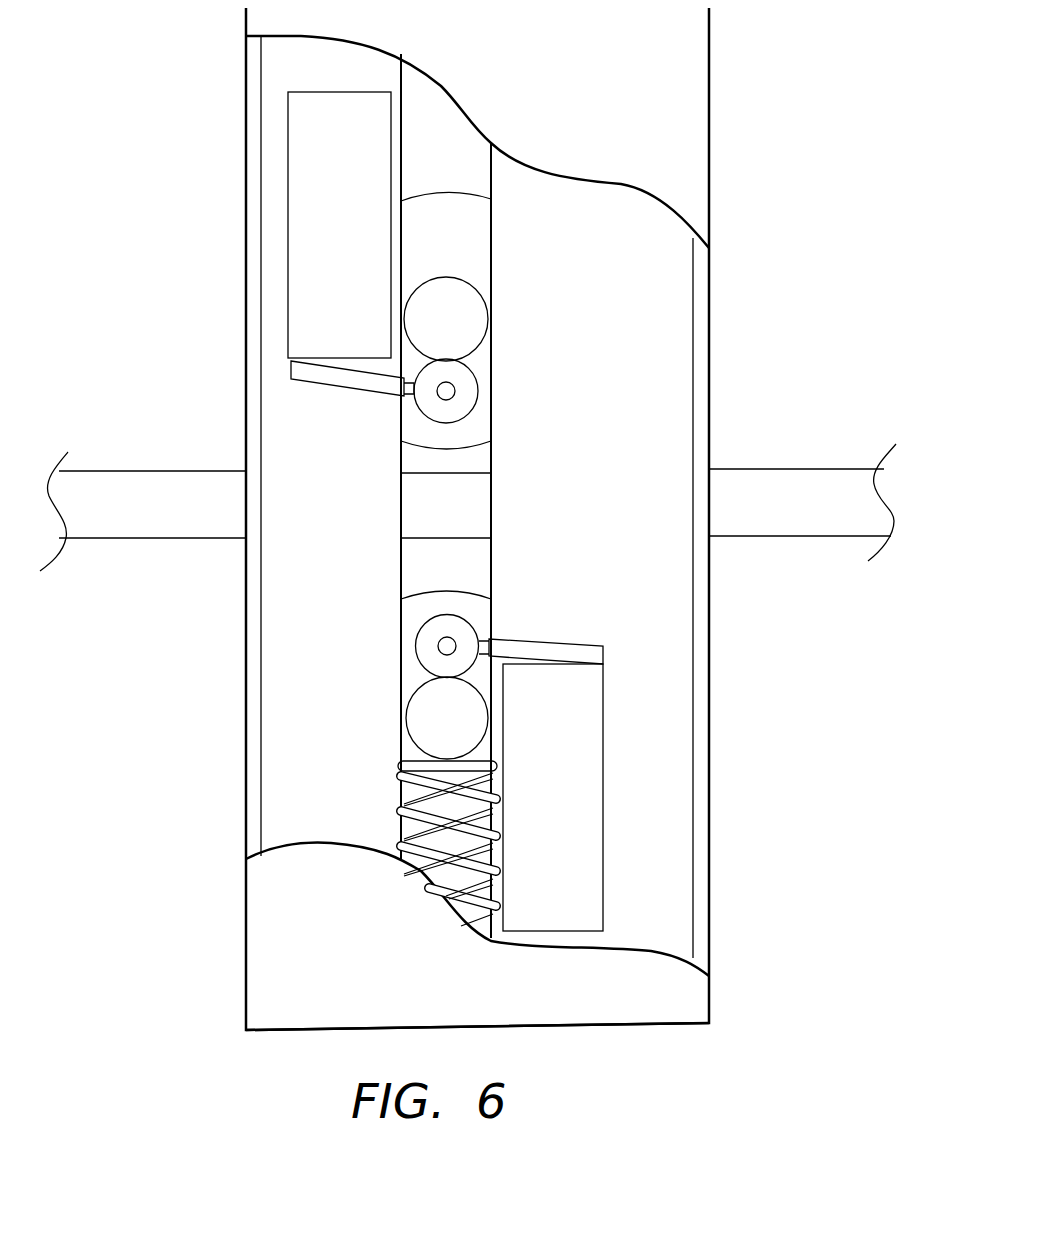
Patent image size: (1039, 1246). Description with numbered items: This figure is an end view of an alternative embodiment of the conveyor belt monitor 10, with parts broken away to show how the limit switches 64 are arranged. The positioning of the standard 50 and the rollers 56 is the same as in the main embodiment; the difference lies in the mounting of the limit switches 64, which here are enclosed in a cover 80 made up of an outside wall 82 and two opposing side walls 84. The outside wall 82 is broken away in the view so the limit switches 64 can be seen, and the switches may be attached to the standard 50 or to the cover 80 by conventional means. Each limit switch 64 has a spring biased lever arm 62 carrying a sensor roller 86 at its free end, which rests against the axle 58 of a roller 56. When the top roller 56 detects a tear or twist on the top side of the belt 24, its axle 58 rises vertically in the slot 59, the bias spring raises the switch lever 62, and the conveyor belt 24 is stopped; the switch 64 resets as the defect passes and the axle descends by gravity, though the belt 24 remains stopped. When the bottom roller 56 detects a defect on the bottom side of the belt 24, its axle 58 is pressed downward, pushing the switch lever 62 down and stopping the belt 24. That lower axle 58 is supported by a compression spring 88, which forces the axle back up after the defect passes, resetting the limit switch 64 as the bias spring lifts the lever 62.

The conveyor belt monitor 10 is at (172, 285).
The conveyor belt 24 is at (452, 470).
The standard 50 is at (282, 546).
The roller 56 is at (490, 228).
The axle 58 is at (477, 290).
The slot 59 is at (493, 157).
The lever arm 62 is at (320, 387).
The limit switch 64 is at (358, 90).
The cover 80 is at (172, 892).
The outside wall 82 is at (573, 61).
The side wall 84 is at (690, 328).
The sensor roller 86 is at (478, 390).
The compression spring 88 is at (402, 808).